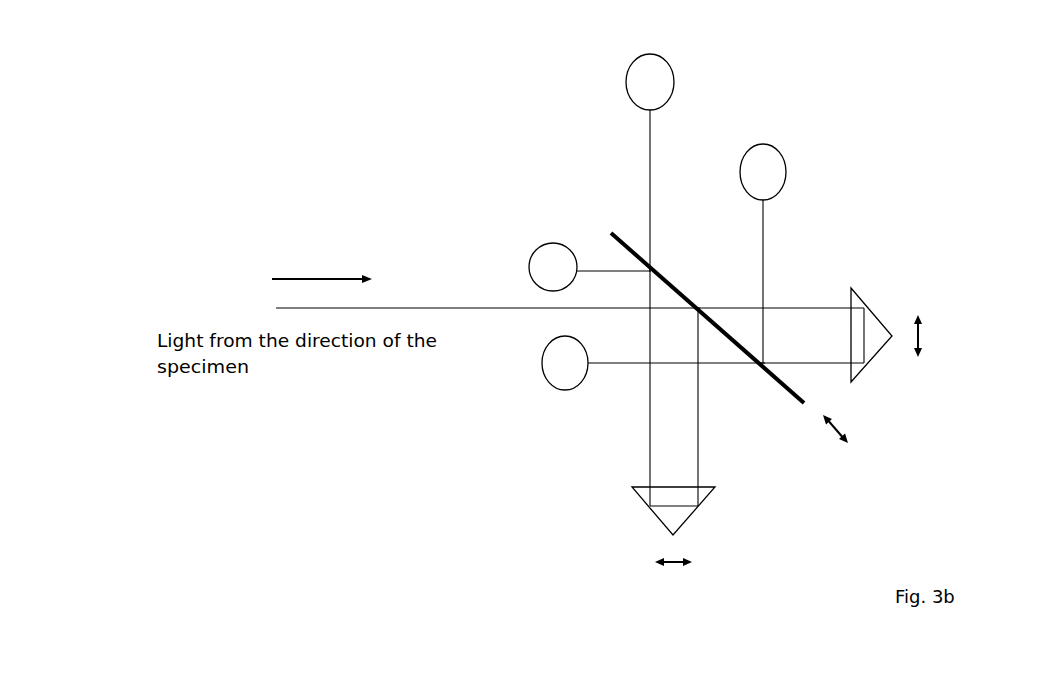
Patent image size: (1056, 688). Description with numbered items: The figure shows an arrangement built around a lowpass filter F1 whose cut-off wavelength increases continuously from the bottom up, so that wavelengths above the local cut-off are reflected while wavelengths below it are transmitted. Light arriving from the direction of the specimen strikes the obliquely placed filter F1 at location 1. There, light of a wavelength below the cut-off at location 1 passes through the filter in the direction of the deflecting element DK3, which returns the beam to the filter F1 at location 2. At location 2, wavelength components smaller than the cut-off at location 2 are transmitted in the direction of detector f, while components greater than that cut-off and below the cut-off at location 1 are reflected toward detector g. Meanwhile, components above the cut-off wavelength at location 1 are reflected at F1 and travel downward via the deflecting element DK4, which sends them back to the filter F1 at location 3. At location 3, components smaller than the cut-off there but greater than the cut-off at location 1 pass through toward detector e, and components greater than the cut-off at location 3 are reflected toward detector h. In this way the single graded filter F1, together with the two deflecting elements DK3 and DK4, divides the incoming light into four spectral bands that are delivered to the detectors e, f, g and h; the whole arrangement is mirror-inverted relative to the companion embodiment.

The detector e is at (666, 73).
The detector g is at (783, 164).
The detector h is at (548, 243).
The detector f is at (565, 384).
The lowpass filter F1 is at (696, 304).
The location of cut-off wavelength 1 is at (703, 289).
The location of cut-off wavelength 2 is at (757, 383).
The location of cut-off wavelength 3 is at (661, 257).
The deflecting prism DK3 is at (932, 335).
The deflecting prism DK4 is at (722, 526).